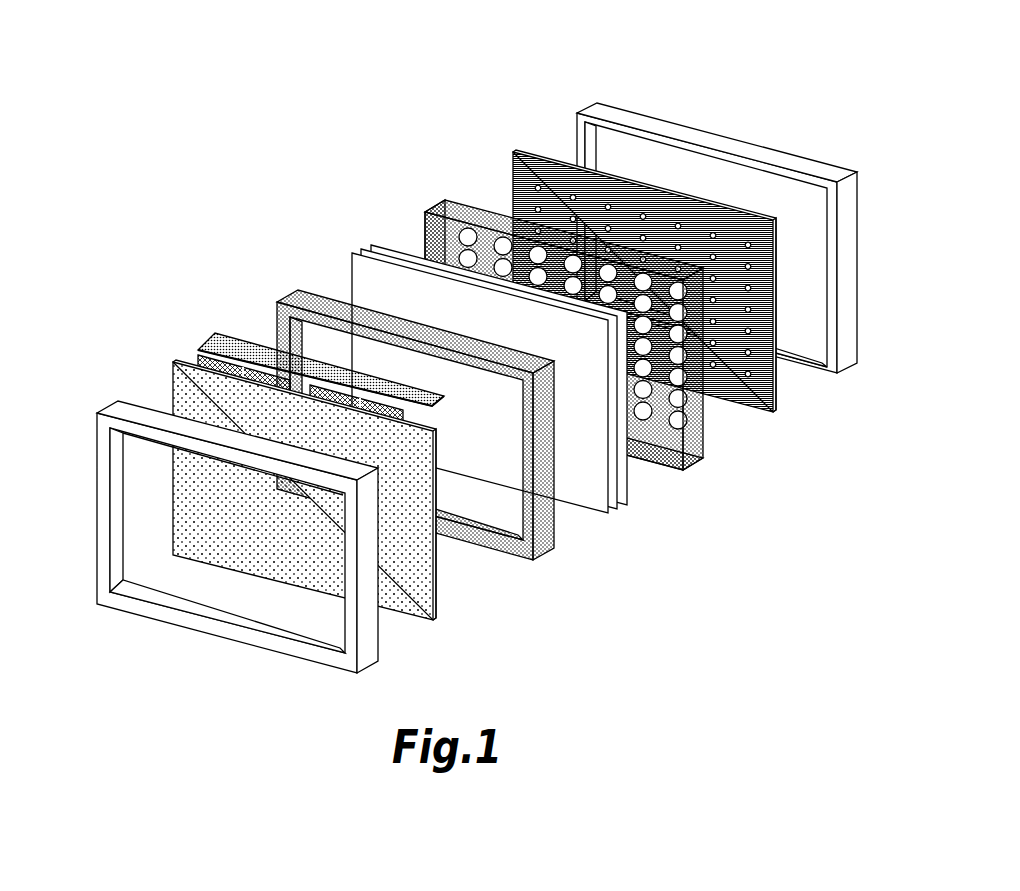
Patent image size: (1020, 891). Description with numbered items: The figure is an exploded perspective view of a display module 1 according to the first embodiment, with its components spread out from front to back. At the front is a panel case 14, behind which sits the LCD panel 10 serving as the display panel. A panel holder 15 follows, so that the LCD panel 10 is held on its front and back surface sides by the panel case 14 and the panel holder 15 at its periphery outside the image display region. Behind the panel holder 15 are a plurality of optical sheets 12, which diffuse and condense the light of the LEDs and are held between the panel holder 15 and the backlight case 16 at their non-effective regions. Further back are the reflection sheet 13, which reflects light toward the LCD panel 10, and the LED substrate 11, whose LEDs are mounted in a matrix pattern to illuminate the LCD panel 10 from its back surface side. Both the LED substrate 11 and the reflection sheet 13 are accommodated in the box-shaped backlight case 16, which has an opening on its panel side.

The display module 1 is at (242, 158).
The LCD panel 10 is at (207, 387).
The LED substrate 11 is at (557, 177).
The optical sheets 12 is at (375, 272).
The reflection sheet 13 is at (455, 223).
The panel case 14 is at (132, 415).
The panel holder 15 is at (307, 300).
The backlight case 16 is at (628, 145).